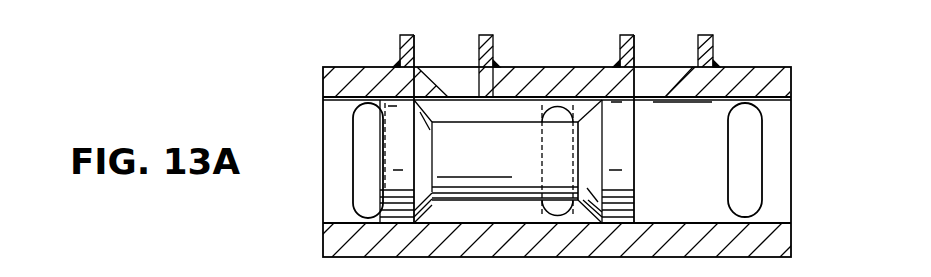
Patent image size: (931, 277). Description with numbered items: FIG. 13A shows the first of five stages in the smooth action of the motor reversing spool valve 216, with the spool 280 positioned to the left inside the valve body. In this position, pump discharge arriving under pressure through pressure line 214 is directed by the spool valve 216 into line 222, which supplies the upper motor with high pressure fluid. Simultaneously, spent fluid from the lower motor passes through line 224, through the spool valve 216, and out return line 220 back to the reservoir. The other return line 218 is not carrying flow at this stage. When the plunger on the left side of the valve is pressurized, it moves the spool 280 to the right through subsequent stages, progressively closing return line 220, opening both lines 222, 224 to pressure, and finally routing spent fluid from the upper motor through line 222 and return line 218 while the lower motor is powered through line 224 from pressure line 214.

The pressure line 214 is at (551, 108).
The spool valve 216 is at (294, 78).
The return line 218 is at (354, 160).
The return line 220 is at (762, 198).
The line 222 is at (417, 41).
The line 224 is at (697, 41).
The spool 280 is at (510, 167).